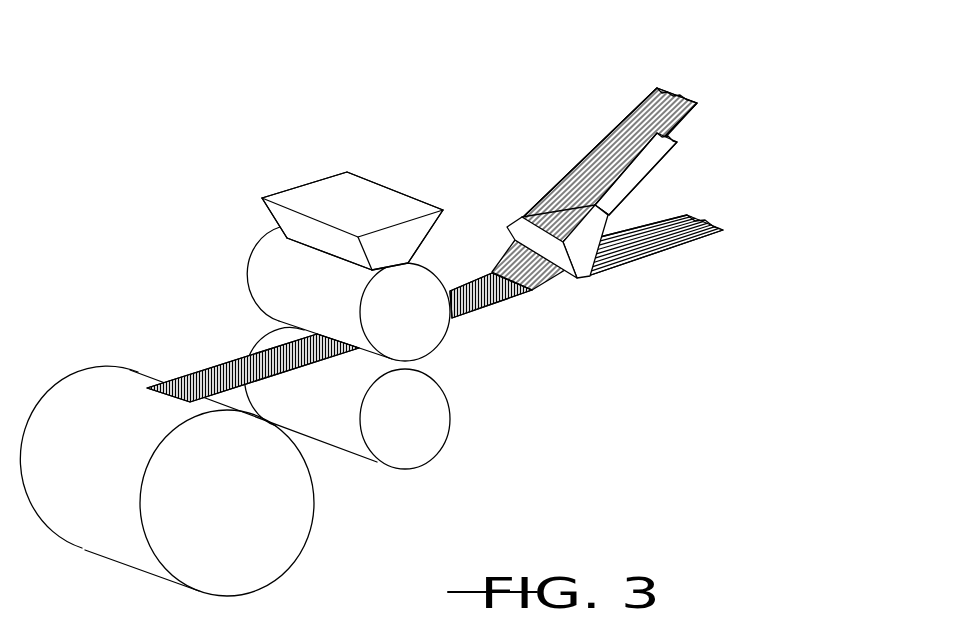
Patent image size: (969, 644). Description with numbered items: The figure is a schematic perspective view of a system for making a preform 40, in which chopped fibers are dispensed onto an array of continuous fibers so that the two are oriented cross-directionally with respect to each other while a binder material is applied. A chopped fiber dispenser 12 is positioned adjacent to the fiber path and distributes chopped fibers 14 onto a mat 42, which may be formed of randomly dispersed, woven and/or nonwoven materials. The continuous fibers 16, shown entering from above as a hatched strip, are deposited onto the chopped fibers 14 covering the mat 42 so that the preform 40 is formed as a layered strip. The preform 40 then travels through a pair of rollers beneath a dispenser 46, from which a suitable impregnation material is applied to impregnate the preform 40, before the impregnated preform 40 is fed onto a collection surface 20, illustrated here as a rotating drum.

The chopped fiber dispenser 12 is at (612, 226).
The chopped fibers 14 is at (503, 302).
The continuous fibers 16 is at (568, 172).
The collection surface 20 is at (300, 557).
The preform 40 is at (220, 360).
The mat 42 is at (631, 262).
The dispenser 46 is at (317, 180).